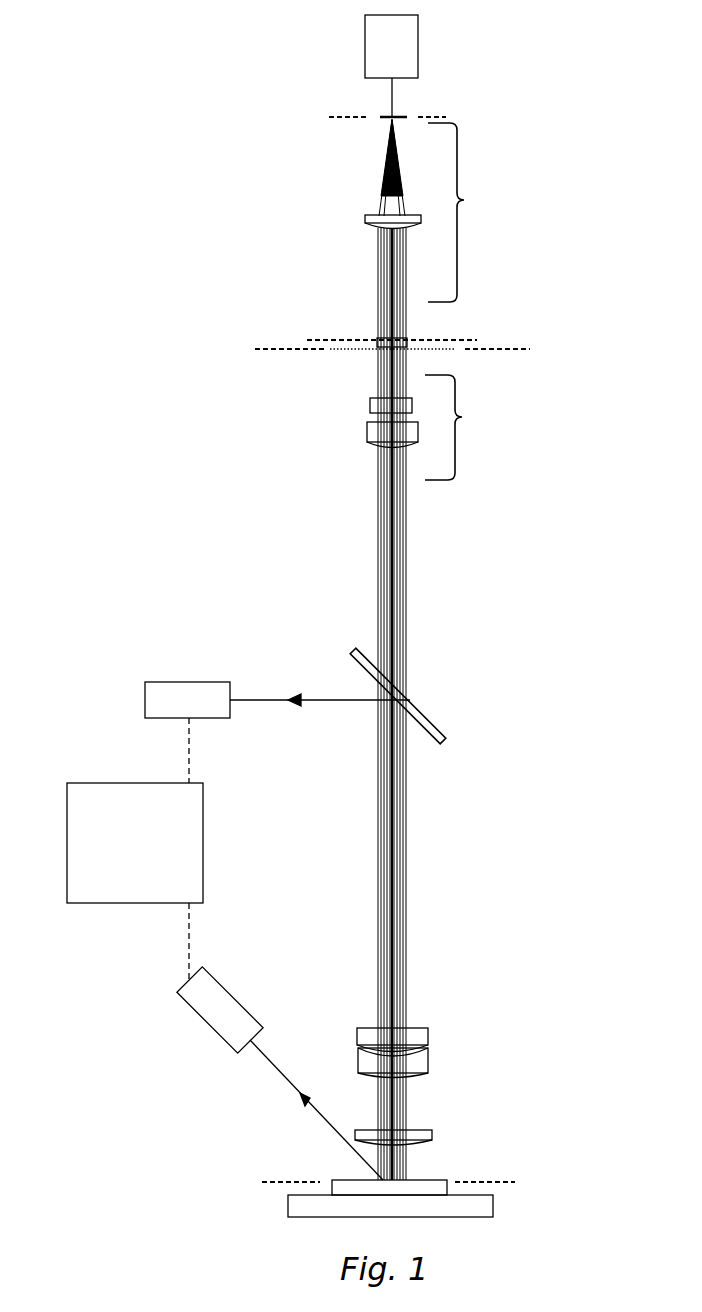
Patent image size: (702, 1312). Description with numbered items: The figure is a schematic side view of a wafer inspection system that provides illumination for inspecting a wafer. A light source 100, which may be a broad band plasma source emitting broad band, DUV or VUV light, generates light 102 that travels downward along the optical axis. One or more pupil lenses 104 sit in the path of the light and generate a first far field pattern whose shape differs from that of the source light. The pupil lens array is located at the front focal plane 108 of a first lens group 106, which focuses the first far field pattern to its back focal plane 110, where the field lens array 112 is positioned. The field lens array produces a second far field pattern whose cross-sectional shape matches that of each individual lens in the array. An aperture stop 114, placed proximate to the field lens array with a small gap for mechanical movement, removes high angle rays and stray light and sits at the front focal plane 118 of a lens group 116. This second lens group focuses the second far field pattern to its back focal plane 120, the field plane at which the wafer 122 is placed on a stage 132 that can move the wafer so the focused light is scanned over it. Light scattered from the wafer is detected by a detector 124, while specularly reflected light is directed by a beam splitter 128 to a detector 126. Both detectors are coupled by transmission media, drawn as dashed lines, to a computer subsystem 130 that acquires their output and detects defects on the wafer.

The light source 100 is at (418, 33).
The light 102 is at (392, 100).
The pupil lenses 104 is at (398, 113).
The first lens group 106 is at (437, 212).
The front focal plane of the first lens group 108 is at (448, 117).
The back focal plane of the first lens group 110 is at (318, 340).
The field lens array 112 is at (406, 340).
The aperture stop 114 is at (362, 350).
The lens group 116 is at (425, 1130).
The front focal plane of the lens group 118 is at (515, 349).
The back focal plane of the lens group 120 is at (500, 1182).
The wafer 122 is at (352, 1178).
The detector 124 is at (182, 988).
The detector 126 is at (145, 698).
The beam splitter 128 is at (353, 651).
The computer subsystem 130 is at (116, 884).
The stage 132 is at (287, 1205).